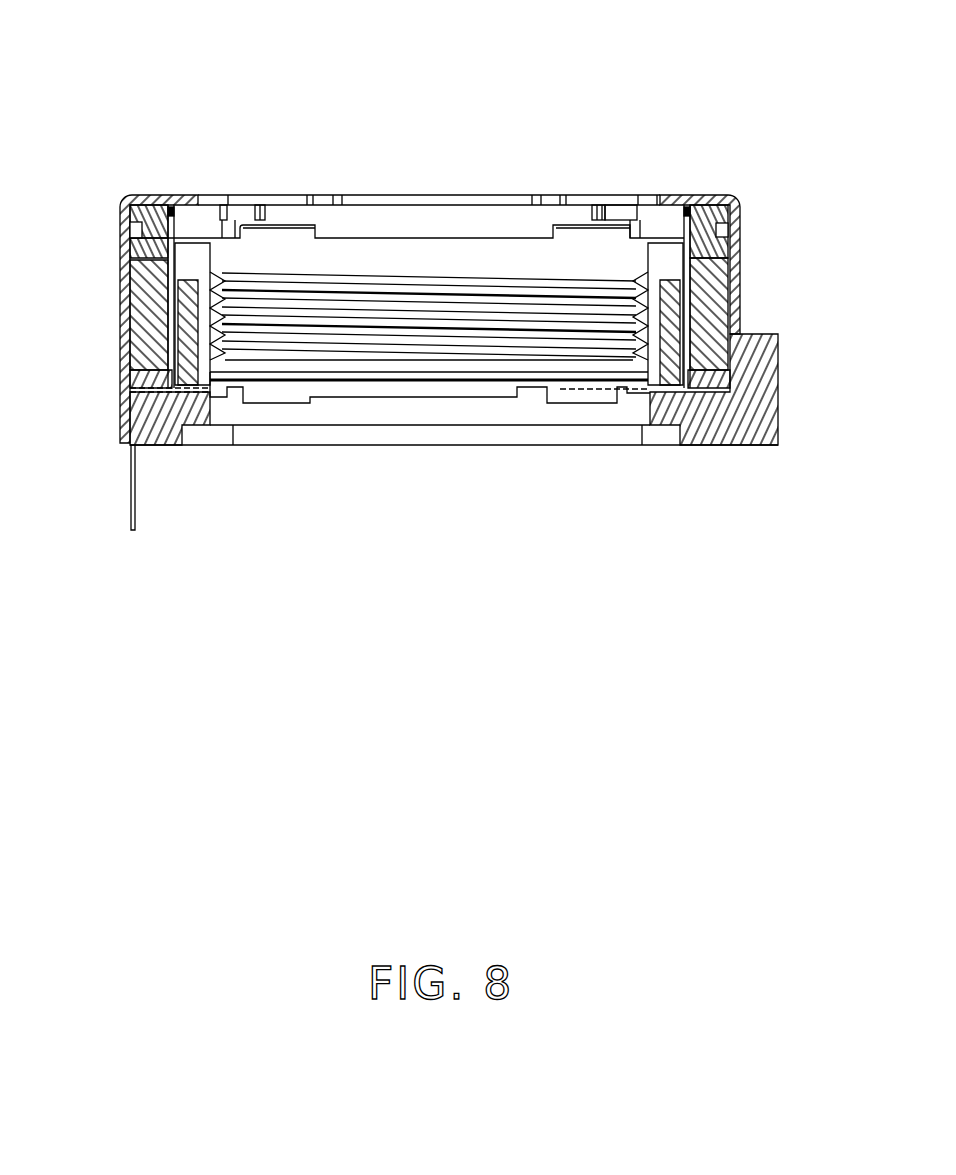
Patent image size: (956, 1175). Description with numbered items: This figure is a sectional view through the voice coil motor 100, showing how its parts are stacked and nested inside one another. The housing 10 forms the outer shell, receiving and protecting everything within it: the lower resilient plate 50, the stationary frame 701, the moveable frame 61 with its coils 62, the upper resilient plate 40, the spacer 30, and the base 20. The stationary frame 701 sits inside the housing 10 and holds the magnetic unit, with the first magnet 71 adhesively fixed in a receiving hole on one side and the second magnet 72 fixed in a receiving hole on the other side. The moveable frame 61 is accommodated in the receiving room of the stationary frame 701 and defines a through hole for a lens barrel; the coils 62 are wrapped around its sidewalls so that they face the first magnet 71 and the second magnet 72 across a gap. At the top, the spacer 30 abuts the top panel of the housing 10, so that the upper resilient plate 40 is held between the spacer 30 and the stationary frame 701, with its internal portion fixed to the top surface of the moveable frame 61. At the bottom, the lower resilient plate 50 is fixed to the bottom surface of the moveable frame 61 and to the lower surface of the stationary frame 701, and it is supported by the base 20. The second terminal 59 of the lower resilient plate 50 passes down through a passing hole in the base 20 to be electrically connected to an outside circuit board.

The voice coil motor 100 is at (468, 38).
The housing 10 is at (736, 197).
The base 20 is at (762, 406).
The spacer 30 is at (702, 217).
The upper resilient plate 40 is at (138, 237).
The stationary frame 701 is at (150, 253).
The lower resilient plate 50 is at (132, 393).
The second terminal 59 is at (134, 494).
The moveable frame 61 is at (197, 243).
The coils 62 is at (187, 305).
The first magnet 71 is at (150, 322).
The second magnet 72 is at (720, 298).